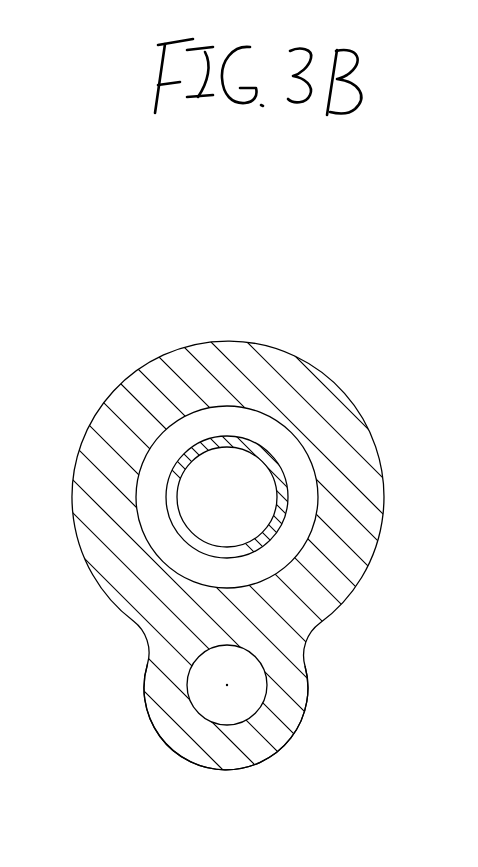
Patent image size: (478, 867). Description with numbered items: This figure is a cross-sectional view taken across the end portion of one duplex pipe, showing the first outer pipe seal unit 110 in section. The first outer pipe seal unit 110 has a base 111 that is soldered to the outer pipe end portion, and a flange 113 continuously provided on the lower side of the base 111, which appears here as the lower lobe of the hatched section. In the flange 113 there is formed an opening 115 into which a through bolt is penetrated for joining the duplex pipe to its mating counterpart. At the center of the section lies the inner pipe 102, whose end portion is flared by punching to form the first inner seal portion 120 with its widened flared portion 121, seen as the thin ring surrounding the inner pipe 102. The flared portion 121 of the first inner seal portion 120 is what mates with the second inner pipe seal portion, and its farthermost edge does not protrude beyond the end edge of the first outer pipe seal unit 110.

The first outer pipe seal unit 110 is at (272, 322).
The base 111 is at (282, 393).
The first inner seal portion 120 is at (211, 417).
The flared portion 121 is at (256, 445).
The inner pipe 102 is at (255, 503).
The opening 115 is at (235, 688).
The flange 113 is at (232, 750).